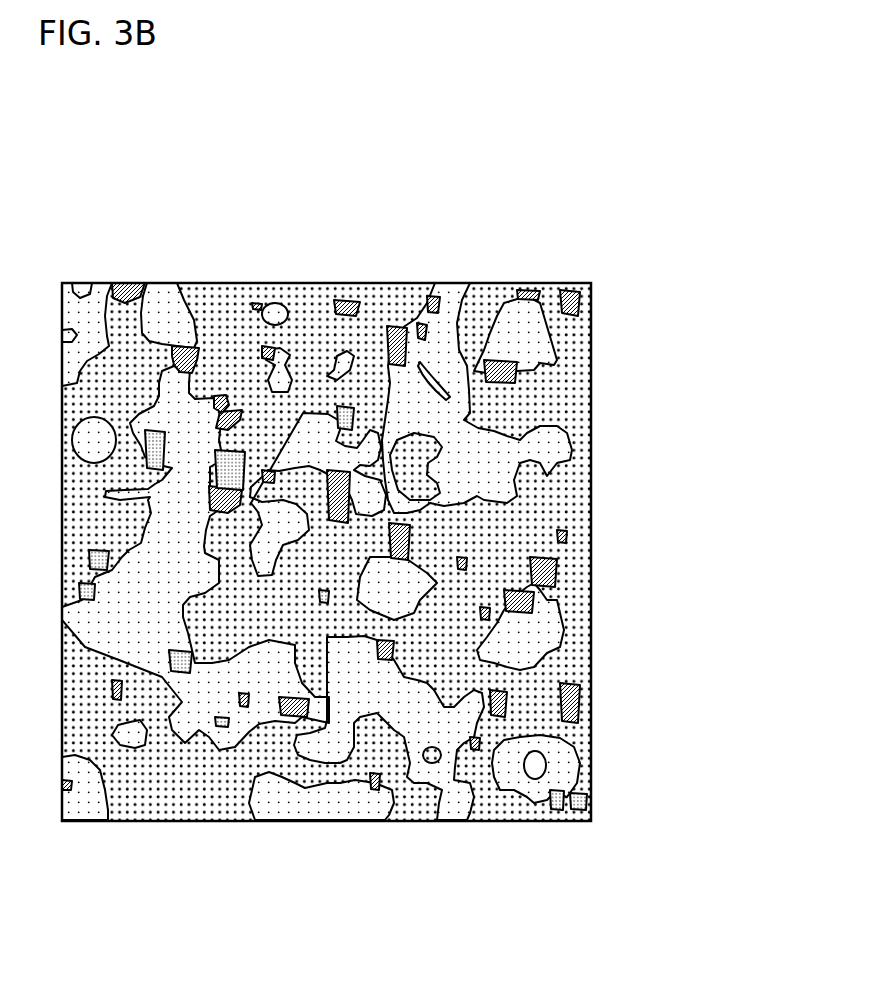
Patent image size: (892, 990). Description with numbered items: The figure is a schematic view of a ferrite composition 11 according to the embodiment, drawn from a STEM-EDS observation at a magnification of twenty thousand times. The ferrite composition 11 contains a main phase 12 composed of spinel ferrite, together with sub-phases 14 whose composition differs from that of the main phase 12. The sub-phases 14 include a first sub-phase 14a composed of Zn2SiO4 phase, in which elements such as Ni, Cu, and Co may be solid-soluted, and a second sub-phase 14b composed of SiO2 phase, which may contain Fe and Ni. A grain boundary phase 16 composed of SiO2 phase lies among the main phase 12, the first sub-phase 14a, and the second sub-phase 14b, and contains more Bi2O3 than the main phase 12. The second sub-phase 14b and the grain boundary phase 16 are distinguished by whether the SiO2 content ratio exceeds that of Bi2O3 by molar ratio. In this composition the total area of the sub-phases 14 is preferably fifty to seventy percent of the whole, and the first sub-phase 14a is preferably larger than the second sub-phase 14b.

The ferrite composition 11 is at (450, 492).
The main phase 12 is at (453, 410).
The sub-phases 14 is at (450, 546).
The first sub-phase 14a is at (427, 473).
The second sub-phase 14b is at (353, 513).
The grain boundary phase 16 is at (503, 738).